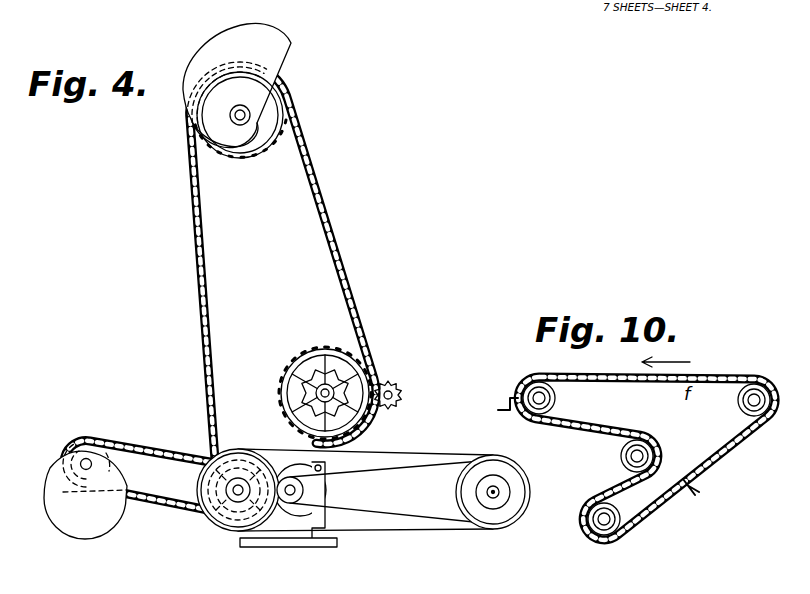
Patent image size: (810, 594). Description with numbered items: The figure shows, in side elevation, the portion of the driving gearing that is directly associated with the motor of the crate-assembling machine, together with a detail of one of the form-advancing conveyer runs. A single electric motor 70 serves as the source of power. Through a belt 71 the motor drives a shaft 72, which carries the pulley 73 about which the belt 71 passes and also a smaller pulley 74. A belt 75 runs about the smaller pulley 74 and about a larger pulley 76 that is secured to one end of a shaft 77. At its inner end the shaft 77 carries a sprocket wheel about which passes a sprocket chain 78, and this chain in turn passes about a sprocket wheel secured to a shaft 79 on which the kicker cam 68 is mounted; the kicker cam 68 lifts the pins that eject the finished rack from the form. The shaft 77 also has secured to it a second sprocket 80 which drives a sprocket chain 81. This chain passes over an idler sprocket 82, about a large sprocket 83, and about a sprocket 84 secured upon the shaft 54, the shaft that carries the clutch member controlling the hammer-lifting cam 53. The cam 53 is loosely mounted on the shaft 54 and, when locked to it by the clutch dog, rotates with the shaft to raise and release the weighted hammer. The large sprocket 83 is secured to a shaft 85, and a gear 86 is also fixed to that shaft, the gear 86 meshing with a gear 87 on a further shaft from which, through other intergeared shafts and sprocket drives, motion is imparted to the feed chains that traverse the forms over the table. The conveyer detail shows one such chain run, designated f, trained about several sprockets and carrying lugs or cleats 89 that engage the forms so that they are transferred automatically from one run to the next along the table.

In FIG. 4, the cam 53 is at (281, 64).
In FIG. 4, the shaft 54 is at (249, 117).
In FIG. 4, the sprocket 84 is at (264, 148).
In FIG. 4, the sprocket chain 81 is at (318, 192).
In FIG. 4, the large sprocket 83 is at (320, 345).
In FIG. 4, the shaft 85 is at (333, 388).
In FIG. 4, the gear 86 is at (350, 422).
In FIG. 4, the gear 87 is at (400, 396).
In FIG. 4, the second sprocket 80 is at (235, 468).
In FIG. 4, the idler sprocket 82 is at (282, 450).
In FIG. 4, the sprocket chain 78 is at (156, 458).
In FIG. 4, the shaft 79 is at (83, 471).
In FIG. 4, the kicker cam 68 is at (60, 518).
In FIG. 4, the shaft 77 is at (200, 515).
In FIG. 4, the larger pulley 76 is at (236, 518).
In FIG. 4, the electric motor 70 is at (312, 490).
In FIG. 4, the belt 71 is at (450, 463).
In FIG. 4, the belt 75 is at (365, 527).
In FIG. 4, the smaller pulley 74 is at (498, 489).
In FIG. 4, the pulley 73 is at (515, 491).
In FIG. 4, the shaft 72 is at (490, 508).
In FIG. 10, the lugs or cleats 89 is at (508, 410).